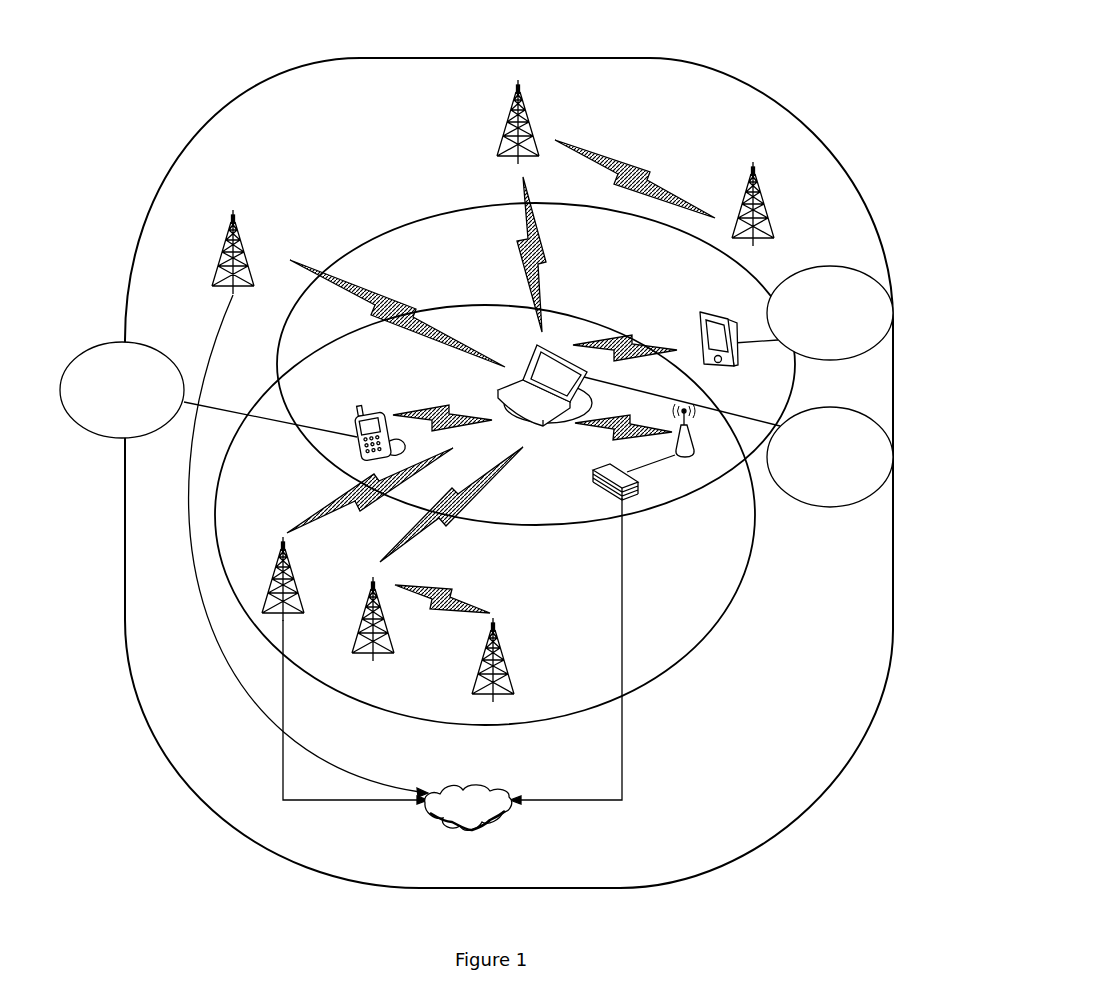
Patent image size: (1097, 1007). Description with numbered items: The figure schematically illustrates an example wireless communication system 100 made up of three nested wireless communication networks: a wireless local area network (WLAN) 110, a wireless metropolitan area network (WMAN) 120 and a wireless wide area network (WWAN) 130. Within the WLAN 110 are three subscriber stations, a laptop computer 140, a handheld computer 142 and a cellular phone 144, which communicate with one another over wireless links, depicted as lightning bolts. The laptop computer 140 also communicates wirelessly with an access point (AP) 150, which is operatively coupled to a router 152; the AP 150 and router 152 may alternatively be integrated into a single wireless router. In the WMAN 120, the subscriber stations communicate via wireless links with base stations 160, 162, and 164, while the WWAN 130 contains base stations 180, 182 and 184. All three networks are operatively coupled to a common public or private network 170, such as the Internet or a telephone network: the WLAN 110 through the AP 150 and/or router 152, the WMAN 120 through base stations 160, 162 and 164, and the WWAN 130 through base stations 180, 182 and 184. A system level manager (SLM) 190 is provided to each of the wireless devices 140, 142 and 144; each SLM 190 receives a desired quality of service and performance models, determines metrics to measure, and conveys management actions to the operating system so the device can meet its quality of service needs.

The wireless communication system 100 is at (284, 72).
The wireless local area network (WLAN) 110 is at (428, 208).
The wireless metropolitan area network (WMAN) 120 is at (713, 623).
The wireless wide area network (WWAN) 130 is at (733, 73).
The laptop computer 140 is at (535, 343).
The handheld computer 142 is at (698, 312).
The cellular phone 144 is at (368, 413).
The access point (AP) 150 is at (693, 433).
The router 152 is at (596, 485).
The base station 160 is at (296, 585).
The base station 162 is at (384, 634).
The base station 164 is at (504, 660).
The common public or private network 170 is at (503, 788).
The base station 180 is at (238, 248).
The base station 182 is at (524, 112).
The base station 184 is at (747, 197).
The system level manager (SLM) 190 is at (143, 343).